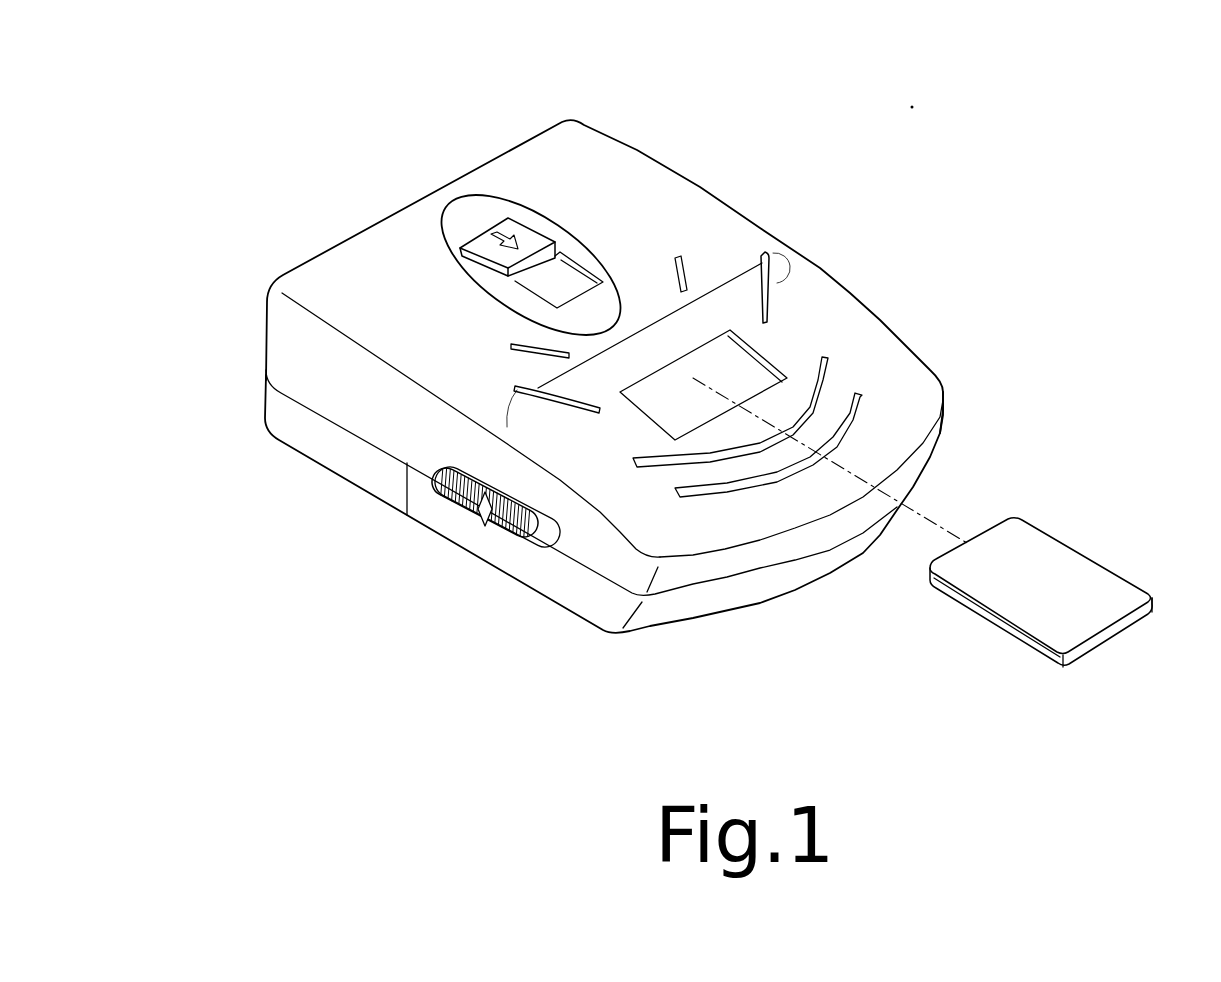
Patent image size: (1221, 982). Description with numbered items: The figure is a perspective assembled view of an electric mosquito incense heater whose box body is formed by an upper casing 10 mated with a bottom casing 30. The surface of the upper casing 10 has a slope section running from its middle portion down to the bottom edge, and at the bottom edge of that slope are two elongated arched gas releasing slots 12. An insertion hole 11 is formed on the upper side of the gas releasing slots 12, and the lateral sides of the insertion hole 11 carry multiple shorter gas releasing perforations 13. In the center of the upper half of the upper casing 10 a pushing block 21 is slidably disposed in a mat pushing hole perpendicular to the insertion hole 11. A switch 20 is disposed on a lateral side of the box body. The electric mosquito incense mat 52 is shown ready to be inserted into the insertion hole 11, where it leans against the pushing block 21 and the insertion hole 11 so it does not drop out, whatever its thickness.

The upper casing 10 is at (607, 163).
The insertion hole 11 is at (727, 370).
The gas releasing slots 12 is at (847, 413).
The gas releasing perforations 13 is at (770, 280).
The switch 20 is at (505, 538).
The pushing block 21 is at (526, 236).
The bottom casing 30 is at (330, 450).
The electric mosquito incense mat 52 is at (1067, 575).